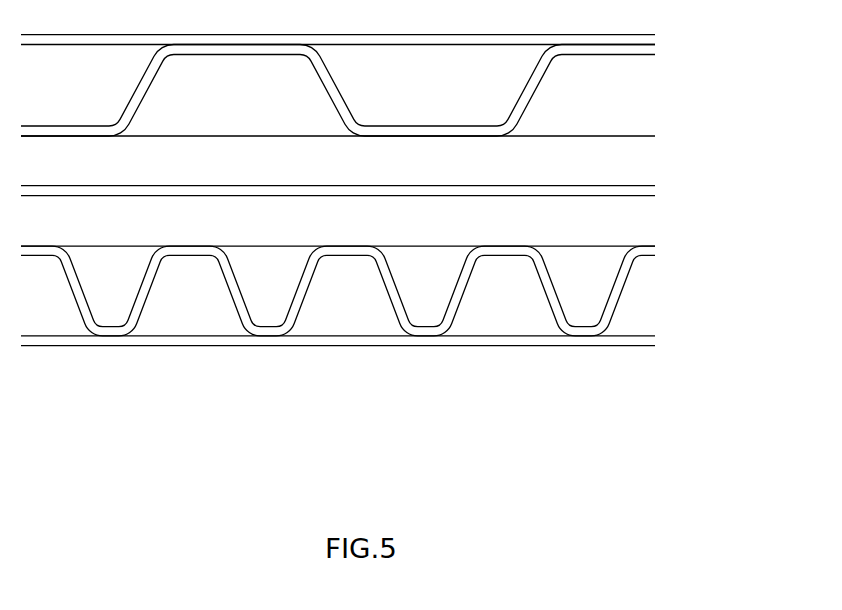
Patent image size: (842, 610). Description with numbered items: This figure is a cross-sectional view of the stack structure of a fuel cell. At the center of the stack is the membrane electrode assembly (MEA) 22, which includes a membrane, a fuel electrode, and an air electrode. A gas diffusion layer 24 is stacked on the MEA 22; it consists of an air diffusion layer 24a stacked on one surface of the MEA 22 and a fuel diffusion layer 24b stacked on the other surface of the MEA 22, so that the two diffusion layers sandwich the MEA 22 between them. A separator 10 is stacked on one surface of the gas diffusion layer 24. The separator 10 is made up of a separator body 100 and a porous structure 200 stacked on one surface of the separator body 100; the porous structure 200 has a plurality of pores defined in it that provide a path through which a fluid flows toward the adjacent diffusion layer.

The separator 10 is at (380, 330).
The membrane electrode assembly 22 is at (653, 189).
The gas diffusion layer 24 is at (411, 224).
The air diffusion layer 24a is at (380, 312).
The fuel diffusion layer 24b is at (647, 155).
The separator body 100 is at (339, 375).
The porous structure 200 is at (617, 295).